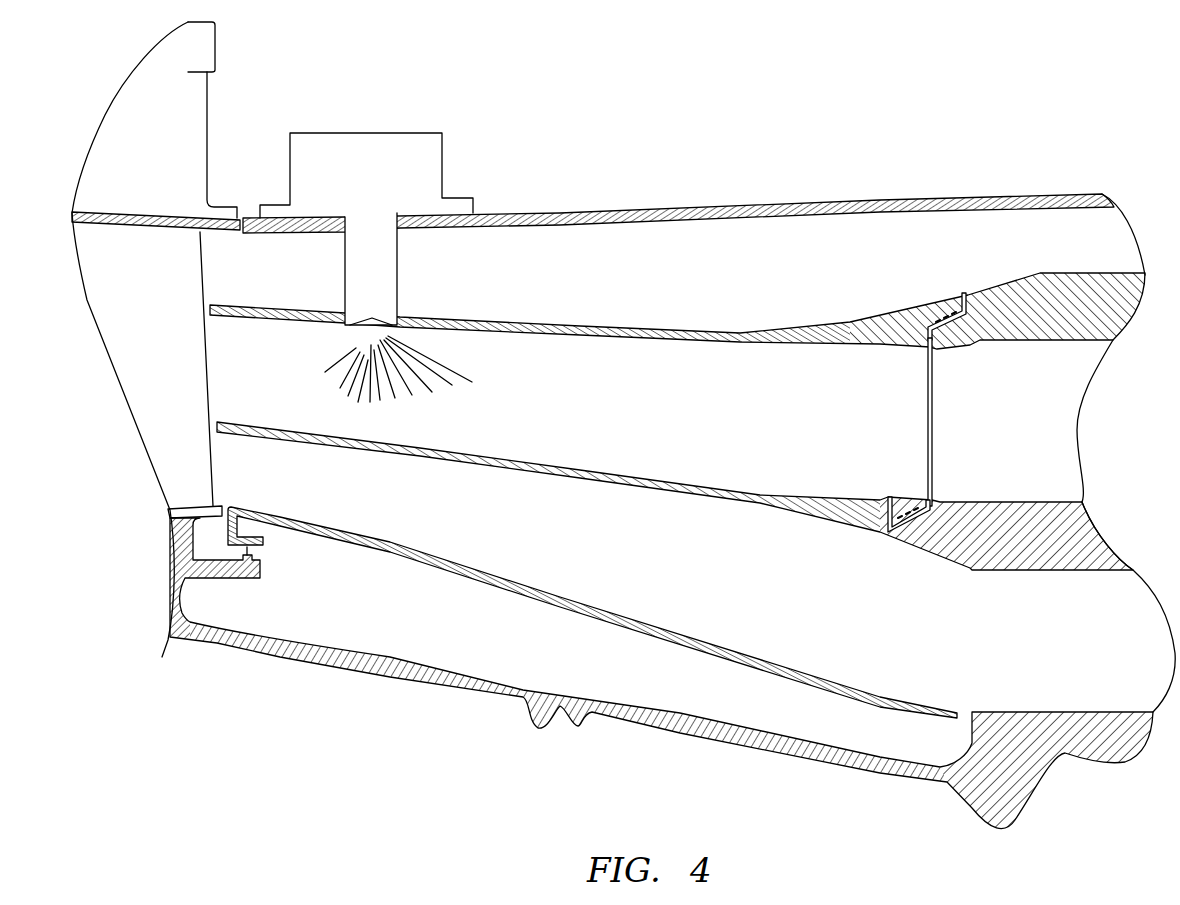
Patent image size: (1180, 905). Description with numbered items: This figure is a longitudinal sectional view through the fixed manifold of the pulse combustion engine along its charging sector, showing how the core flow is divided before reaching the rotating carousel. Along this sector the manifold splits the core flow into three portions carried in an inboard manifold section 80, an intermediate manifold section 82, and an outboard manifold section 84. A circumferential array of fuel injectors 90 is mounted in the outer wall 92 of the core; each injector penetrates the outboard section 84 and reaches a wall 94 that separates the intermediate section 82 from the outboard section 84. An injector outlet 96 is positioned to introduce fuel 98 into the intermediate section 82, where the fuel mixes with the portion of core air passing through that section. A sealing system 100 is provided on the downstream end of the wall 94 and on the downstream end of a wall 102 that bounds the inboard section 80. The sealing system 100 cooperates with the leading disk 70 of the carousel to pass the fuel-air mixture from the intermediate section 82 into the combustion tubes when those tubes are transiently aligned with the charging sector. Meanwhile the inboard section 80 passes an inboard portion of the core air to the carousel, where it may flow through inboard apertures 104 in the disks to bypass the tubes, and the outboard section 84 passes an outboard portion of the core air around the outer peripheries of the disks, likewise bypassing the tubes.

The leading disk 70 is at (1050, 288).
The inboard manifold section 80 is at (640, 556).
The intermediate manifold section 82 is at (579, 388).
The outboard manifold section 84 is at (692, 284).
The fuel injector 90 is at (418, 172).
The outer wall 92 is at (562, 214).
The wall 94 is at (513, 317).
The injector outlet 96 is at (396, 326).
The fuel 98 is at (443, 388).
The sealing system 100 is at (913, 516).
The wall 102 is at (545, 470).
The inboard apertures 104 is at (1037, 650).